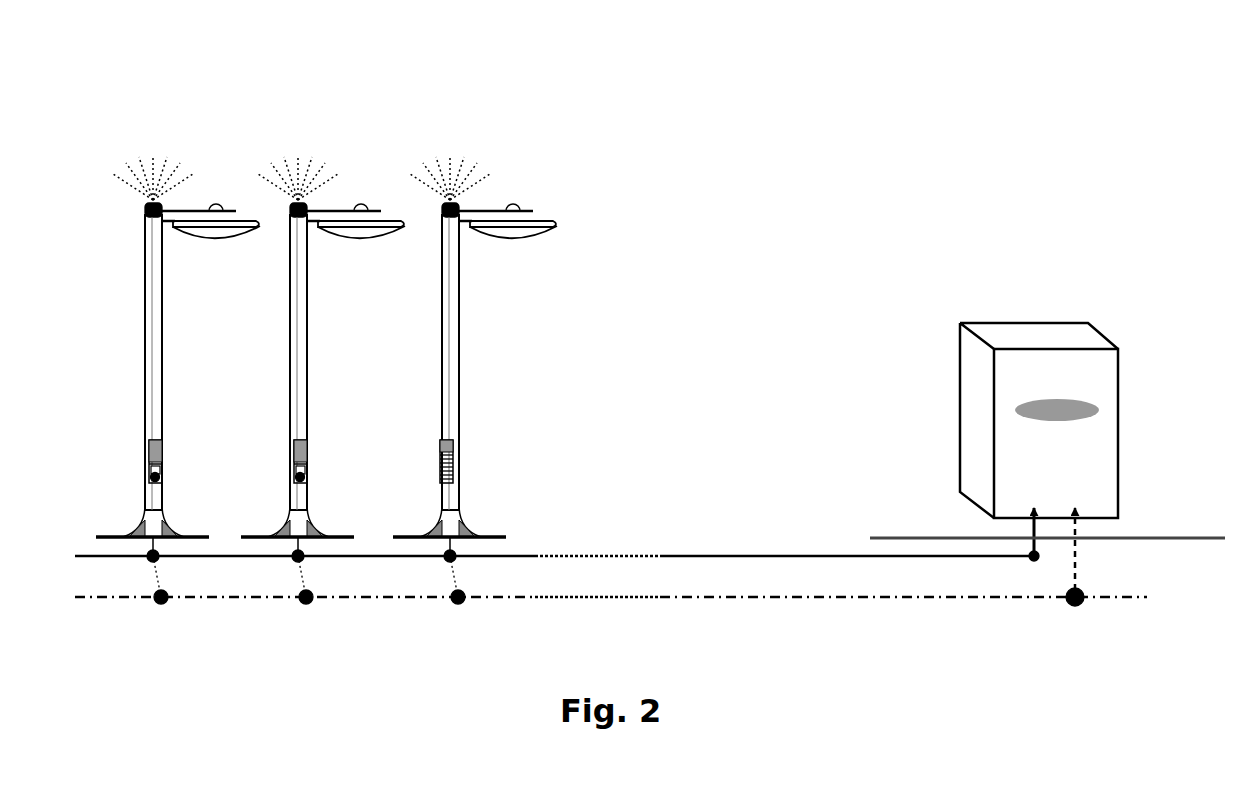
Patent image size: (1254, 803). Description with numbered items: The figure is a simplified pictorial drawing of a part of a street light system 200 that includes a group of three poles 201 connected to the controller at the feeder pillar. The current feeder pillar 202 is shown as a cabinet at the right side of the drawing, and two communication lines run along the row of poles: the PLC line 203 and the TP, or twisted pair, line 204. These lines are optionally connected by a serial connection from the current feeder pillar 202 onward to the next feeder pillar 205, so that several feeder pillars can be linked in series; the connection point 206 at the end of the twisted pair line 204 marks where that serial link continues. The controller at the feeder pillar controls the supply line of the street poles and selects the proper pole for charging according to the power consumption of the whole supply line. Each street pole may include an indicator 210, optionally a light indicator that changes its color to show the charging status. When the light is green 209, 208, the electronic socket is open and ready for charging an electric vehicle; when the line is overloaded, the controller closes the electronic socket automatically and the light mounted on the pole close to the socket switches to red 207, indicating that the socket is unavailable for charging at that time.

The street light system 200 is at (404, 111).
The poles 201 is at (165, 138).
The current feeder pillar 202 is at (1007, 331).
The PLC communication line 203 is at (832, 548).
The TP communication line 204 is at (917, 608).
The next feeder pillar 205 is at (1108, 422).
The network connection node 206 is at (1143, 588).
The red indicator light 207 is at (459, 449).
The green indicator light 208 is at (313, 444).
The green indicator light 209 is at (174, 438).
The indicator 210 is at (142, 455).